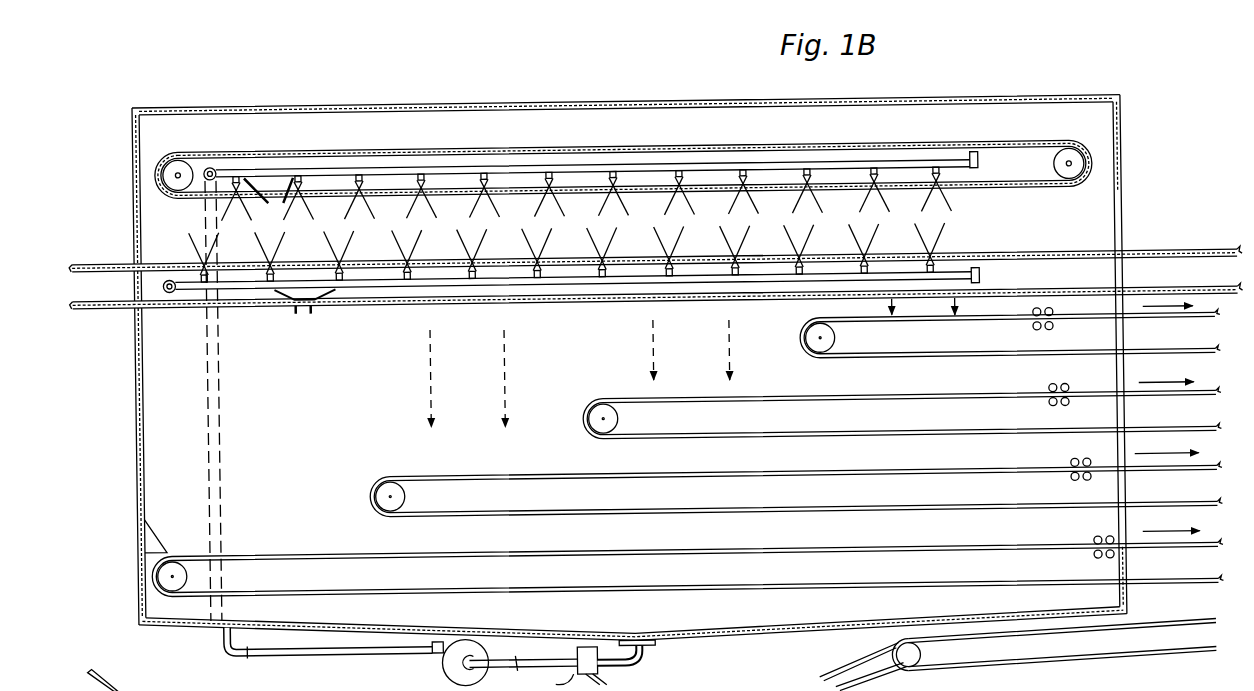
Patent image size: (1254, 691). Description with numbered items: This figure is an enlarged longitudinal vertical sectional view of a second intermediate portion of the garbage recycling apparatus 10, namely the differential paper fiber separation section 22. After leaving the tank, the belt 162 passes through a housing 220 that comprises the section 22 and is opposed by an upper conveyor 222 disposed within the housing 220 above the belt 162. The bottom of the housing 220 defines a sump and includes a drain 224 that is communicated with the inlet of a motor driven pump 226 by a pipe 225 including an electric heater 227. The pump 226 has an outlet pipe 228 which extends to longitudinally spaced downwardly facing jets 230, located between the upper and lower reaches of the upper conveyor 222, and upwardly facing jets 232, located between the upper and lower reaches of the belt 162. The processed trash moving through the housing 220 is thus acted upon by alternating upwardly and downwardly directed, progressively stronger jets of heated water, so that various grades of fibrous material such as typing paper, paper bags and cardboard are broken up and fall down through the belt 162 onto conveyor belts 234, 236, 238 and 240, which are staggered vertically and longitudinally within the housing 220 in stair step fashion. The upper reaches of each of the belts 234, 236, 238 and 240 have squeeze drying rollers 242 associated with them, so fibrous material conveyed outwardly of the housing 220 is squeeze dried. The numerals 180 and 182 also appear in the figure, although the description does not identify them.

The garbage recycling apparatus 10 is at (1059, 105).
The differential paper fiber separation section 22 is at (617, 104).
The belt 162 is at (123, 263).
The lower spray pipe 180 is at (408, 266).
The discharge conveyor 182 is at (709, 690).
The housing 220 is at (713, 106).
The upper conveyor 222 is at (419, 154).
The drain 224 is at (626, 665).
The pipe 225 is at (523, 673).
The motor driven pump 226 is at (437, 676).
The electric heater 227 is at (600, 680).
The outlet pipe 228 is at (245, 659).
The downwardly facing jets 230 is at (268, 203).
The upwardly facing jets 232 is at (298, 312).
The conveyor belt 234 is at (291, 559).
The conveyor belt 236 is at (453, 481).
The conveyor belt 238 is at (628, 407).
The conveyor belt 240 is at (837, 365).
The squeeze drying rollers 242 is at (1030, 335).